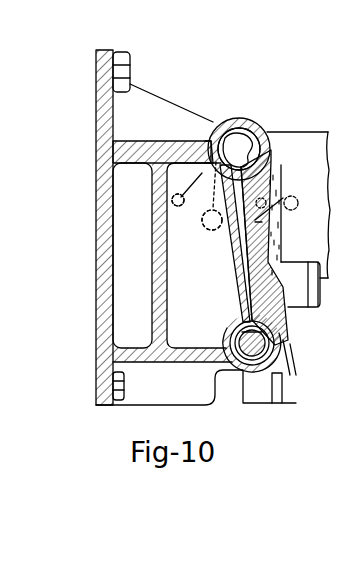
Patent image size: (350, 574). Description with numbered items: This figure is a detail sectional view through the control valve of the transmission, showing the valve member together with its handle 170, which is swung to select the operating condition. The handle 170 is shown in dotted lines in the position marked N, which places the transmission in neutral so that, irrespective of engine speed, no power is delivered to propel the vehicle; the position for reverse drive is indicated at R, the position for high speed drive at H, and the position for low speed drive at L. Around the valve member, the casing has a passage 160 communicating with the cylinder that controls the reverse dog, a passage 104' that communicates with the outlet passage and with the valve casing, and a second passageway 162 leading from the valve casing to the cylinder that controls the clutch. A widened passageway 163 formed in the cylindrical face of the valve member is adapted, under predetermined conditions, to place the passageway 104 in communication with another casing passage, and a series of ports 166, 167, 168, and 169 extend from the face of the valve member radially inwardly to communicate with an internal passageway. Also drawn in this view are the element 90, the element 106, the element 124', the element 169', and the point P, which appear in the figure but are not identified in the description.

The mounting bracket 90 is at (287, 366).
The passageway 104 is at (212, 243).
The passage 104' is at (276, 247).
The pivot bearing 106 is at (237, 321).
The lower cavity 124' is at (196, 387).
The passage 160 is at (117, 152).
The second passageway 162 is at (96, 182).
The widened passageway 163 is at (187, 198).
The port 166 is at (271, 150).
The port 167 is at (246, 150).
The port 168 is at (216, 142).
The port 169 is at (239, 124).
The bearing inner ring 169' is at (259, 117).
The handle 170 is at (213, 232).
The reverse drive position R is at (178, 194).
The neutral position N is at (202, 226).
The point P is at (269, 209).
The low speed drive position L is at (256, 222).
The high speed drive position H is at (297, 208).